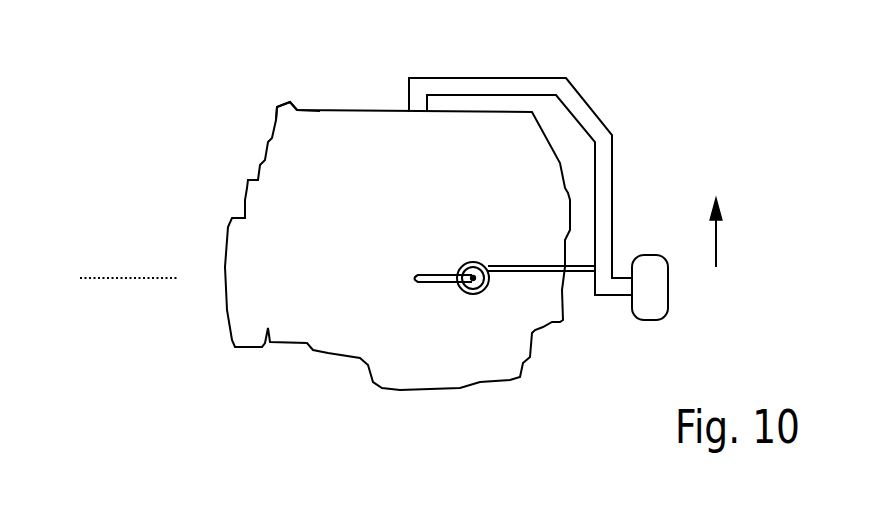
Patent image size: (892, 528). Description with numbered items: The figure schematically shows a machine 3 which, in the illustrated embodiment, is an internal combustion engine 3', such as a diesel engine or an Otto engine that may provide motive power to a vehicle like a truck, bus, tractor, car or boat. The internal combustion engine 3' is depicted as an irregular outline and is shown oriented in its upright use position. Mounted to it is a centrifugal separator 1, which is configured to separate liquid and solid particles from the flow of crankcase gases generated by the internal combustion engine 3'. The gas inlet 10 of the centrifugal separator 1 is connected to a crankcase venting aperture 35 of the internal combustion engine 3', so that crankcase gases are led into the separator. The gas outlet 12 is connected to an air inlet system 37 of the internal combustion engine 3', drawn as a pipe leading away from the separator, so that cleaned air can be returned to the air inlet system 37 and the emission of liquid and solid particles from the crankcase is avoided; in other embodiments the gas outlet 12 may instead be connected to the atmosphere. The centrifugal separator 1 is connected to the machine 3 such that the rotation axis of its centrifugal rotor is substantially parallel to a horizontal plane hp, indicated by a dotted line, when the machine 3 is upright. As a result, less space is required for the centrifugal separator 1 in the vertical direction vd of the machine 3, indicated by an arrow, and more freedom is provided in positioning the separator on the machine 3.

The machine 3 is at (327, 228).
The internal combustion engine 3' is at (266, 116).
The centrifugal separator 1 is at (468, 262).
The gas outlet 12 is at (485, 262).
The gas inlet 10 is at (475, 295).
The crankcase venting aperture 35 is at (413, 279).
The air inlet system 37 is at (612, 172).
The horizontal plane hp is at (137, 278).
The vertical direction vd is at (716, 235).